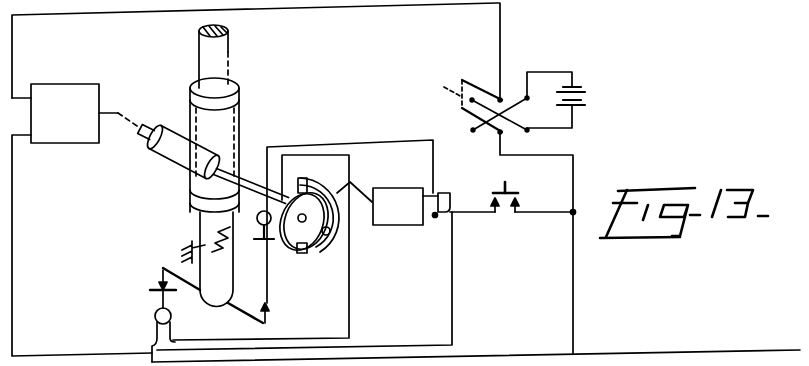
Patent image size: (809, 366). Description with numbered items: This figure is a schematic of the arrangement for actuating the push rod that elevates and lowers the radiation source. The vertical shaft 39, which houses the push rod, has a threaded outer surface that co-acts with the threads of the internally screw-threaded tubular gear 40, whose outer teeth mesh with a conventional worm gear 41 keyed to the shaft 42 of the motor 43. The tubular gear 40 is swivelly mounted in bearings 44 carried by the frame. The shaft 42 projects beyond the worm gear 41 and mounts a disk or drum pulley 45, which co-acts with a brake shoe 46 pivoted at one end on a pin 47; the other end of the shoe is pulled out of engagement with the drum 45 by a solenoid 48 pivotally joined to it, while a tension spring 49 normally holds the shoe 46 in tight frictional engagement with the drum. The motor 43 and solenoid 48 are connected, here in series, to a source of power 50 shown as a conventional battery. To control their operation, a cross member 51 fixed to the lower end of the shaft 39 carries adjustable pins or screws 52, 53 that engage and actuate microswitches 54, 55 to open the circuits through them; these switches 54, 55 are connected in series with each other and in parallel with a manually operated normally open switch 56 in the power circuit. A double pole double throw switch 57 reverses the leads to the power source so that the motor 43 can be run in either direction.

The shaft 39 is at (229, 52).
The tubular gear 40 is at (241, 122).
The worm gear 41 is at (167, 163).
The shaft 42 is at (126, 116).
The motor 43 is at (58, 83).
The bearings 44 is at (236, 93).
The disk or drum pulley 45 is at (300, 233).
The brake shoe 46 is at (322, 186).
The pin 47 is at (331, 233).
The solenoid 48 is at (397, 188).
The tension spring 49 is at (221, 248).
The source of power 50 is at (584, 97).
The cross member 51 is at (237, 311).
The adjustable pin or screw 52 is at (271, 320).
The adjustable pin or screw 53 is at (160, 270).
The microswitch 54 is at (258, 221).
The microswitch 55 is at (155, 316).
The manually operated normally open switch 56 is at (499, 189).
The double pole double throw switch 57 is at (463, 90).